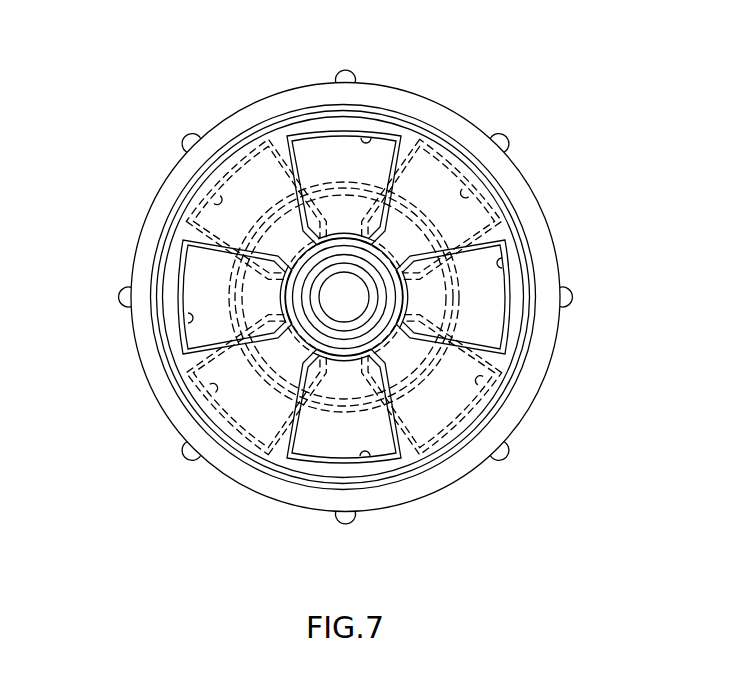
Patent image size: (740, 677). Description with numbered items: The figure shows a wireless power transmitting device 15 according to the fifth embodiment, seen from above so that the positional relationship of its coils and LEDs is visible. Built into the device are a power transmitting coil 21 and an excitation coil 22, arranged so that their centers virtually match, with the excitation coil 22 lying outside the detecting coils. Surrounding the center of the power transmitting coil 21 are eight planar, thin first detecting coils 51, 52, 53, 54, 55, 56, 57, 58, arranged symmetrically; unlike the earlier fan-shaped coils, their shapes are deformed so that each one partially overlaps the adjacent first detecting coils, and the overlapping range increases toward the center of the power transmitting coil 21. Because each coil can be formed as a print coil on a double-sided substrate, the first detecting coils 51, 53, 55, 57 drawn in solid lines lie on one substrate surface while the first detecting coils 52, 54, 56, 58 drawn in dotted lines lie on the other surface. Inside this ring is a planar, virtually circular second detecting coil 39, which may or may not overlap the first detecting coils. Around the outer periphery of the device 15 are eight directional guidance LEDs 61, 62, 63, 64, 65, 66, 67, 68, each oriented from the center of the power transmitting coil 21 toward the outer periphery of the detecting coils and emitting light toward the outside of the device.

The wireless power transmitting device 15 is at (524, 84).
The power transmitting coil 21 is at (455, 313).
The excitation coil 22 is at (522, 379).
The second detecting coil 39 is at (377, 320).
The first detecting coil 51 is at (366, 142).
The first detecting coil 52 is at (462, 197).
The first detecting coil 53 is at (497, 263).
The first detecting coil 54 is at (485, 386).
The first detecting coil 55 is at (367, 455).
The first detecting coil 56 is at (203, 394).
The first detecting coil 57 is at (194, 318).
The first detecting coil 58 is at (222, 205).
The directional guidance LED 61 is at (343, 516).
The directional guidance LED 62 is at (191, 452).
The directional guidance LED 63 is at (118, 297).
The directional guidance LED 64 is at (190, 142).
The directional guidance LED 65 is at (350, 76).
The directional guidance LED 66 is at (502, 142).
The directional guidance LED 67 is at (572, 297).
The directional guidance LED 68 is at (500, 452).